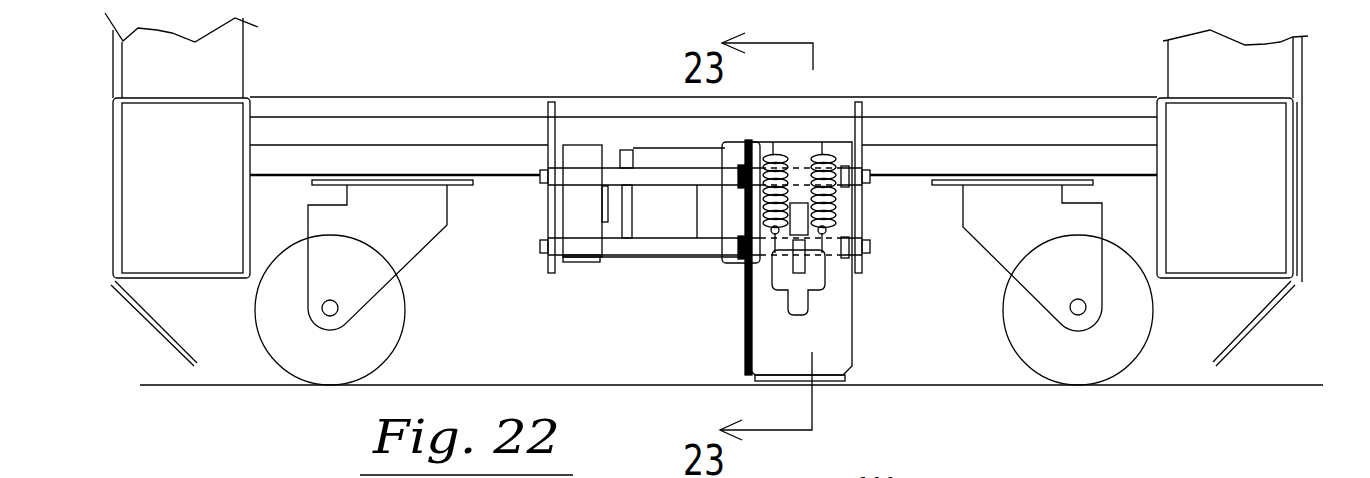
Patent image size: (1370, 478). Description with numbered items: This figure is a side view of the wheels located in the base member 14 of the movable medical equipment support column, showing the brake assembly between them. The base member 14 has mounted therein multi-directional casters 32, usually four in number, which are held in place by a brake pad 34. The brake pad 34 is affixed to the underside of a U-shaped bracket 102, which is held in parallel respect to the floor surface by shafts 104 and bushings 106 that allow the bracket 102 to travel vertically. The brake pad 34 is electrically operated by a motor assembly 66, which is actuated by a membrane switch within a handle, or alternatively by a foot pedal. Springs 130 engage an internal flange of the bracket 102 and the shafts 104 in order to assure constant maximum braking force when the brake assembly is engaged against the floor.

The base member 14 is at (1277, 305).
The multi-directional casters 32 is at (405, 325).
The brake pad 34 is at (820, 385).
The motor assembly 66 is at (635, 148).
The U-shaped bracket 102 is at (745, 308).
The shafts 104 is at (588, 181).
The bushings 106 is at (740, 238).
The springs 130 is at (742, 263).